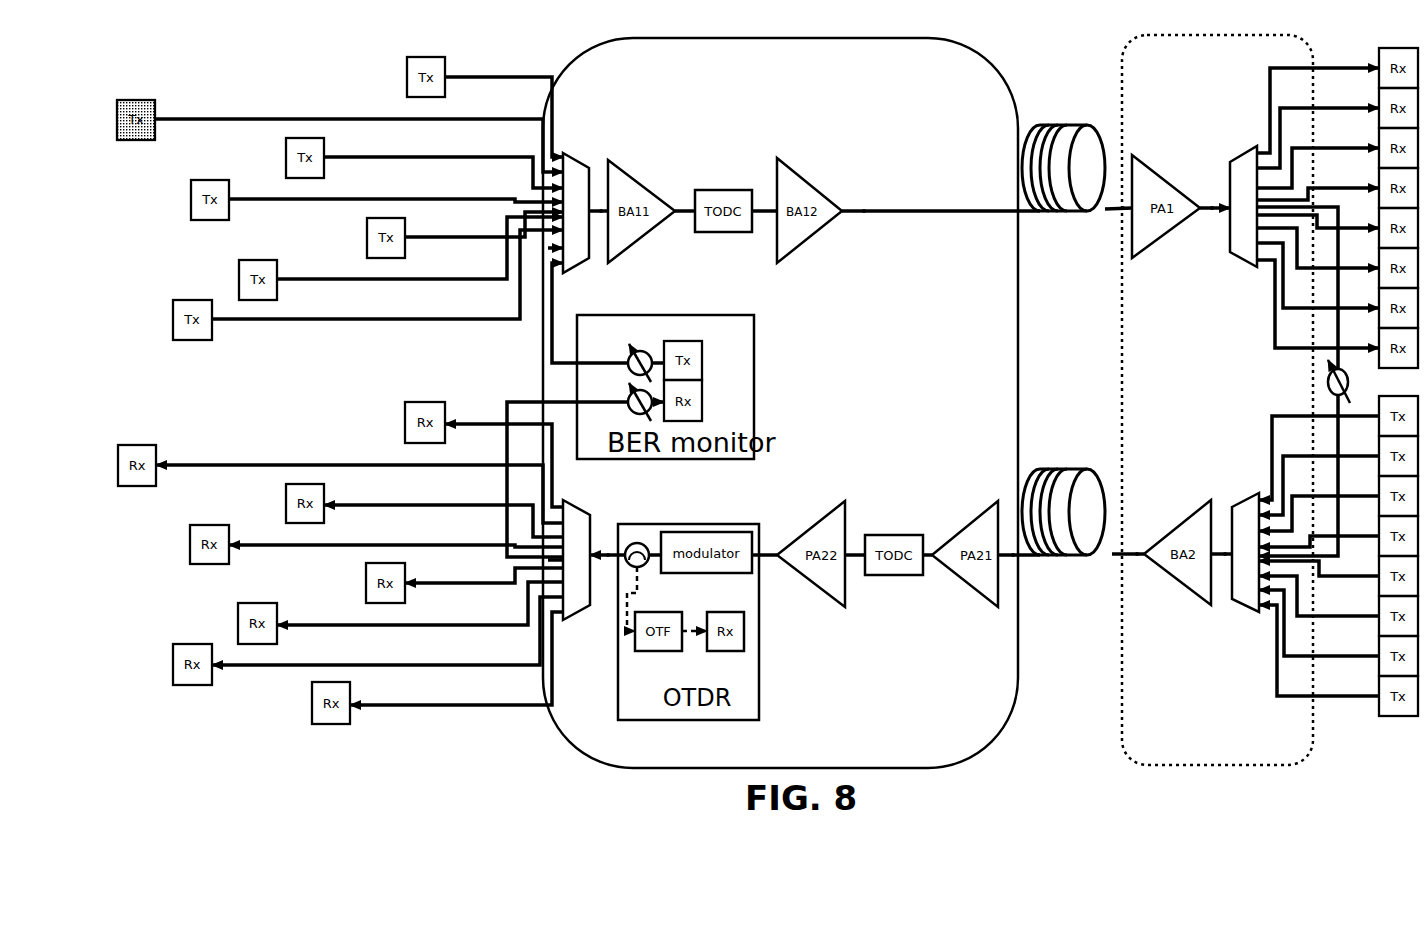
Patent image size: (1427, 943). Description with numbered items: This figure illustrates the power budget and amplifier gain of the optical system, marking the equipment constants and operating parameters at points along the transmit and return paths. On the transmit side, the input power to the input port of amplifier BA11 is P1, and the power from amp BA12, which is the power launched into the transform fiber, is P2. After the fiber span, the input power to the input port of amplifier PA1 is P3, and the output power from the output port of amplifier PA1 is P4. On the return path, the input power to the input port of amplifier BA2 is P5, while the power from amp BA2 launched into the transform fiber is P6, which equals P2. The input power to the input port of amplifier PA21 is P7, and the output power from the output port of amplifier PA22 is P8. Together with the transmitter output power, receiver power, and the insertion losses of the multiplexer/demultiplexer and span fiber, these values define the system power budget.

The input power to the input port of amplifier BA11 P1 is at (601, 208).
The power from amp BA12 P2 is at (864, 208).
The input power to the input port of amplifier PA1 P3 is at (1123, 205).
The output power from the output port of amplifier PA1 P4 is at (1212, 205).
The input power to the input port of amplifier BA2 P5 is at (1225, 559).
The power from amp BA2 P6 is at (1137, 559).
The input power to the input port of amplifier PA21 P7 is at (1013, 560).
The output power from the output port of amplifier PA22 P8 is at (608, 562).